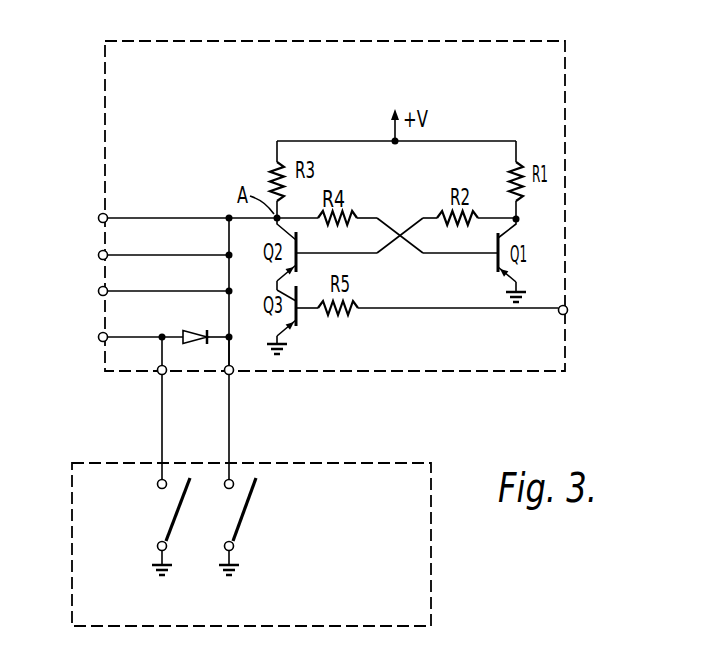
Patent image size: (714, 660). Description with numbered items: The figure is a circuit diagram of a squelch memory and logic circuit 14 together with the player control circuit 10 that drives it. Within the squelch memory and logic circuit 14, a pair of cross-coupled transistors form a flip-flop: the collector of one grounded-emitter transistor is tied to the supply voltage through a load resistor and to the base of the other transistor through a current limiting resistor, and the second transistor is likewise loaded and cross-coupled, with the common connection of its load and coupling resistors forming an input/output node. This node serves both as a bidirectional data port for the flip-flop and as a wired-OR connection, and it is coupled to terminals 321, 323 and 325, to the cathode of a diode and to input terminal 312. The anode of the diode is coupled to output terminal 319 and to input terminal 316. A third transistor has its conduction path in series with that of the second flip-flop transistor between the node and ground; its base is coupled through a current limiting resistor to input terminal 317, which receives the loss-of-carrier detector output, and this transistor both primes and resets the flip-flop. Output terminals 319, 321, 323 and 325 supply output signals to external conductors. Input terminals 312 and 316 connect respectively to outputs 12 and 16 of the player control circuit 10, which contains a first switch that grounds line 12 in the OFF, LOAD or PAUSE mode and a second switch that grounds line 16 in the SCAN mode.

The player control circuit 10 is at (380, 463).
The line 12 is at (231, 427).
The squelch memory and logic circuit 14 is at (566, 139).
The line 16 is at (160, 412).
The input terminal 312 is at (226, 375).
The input terminal 316 is at (161, 366).
The input terminal 317 is at (566, 306).
The output terminal 319 is at (98, 337).
The output terminal 321 is at (98, 291).
The output terminal 323 is at (98, 255).
The output terminal 325 is at (98, 217).